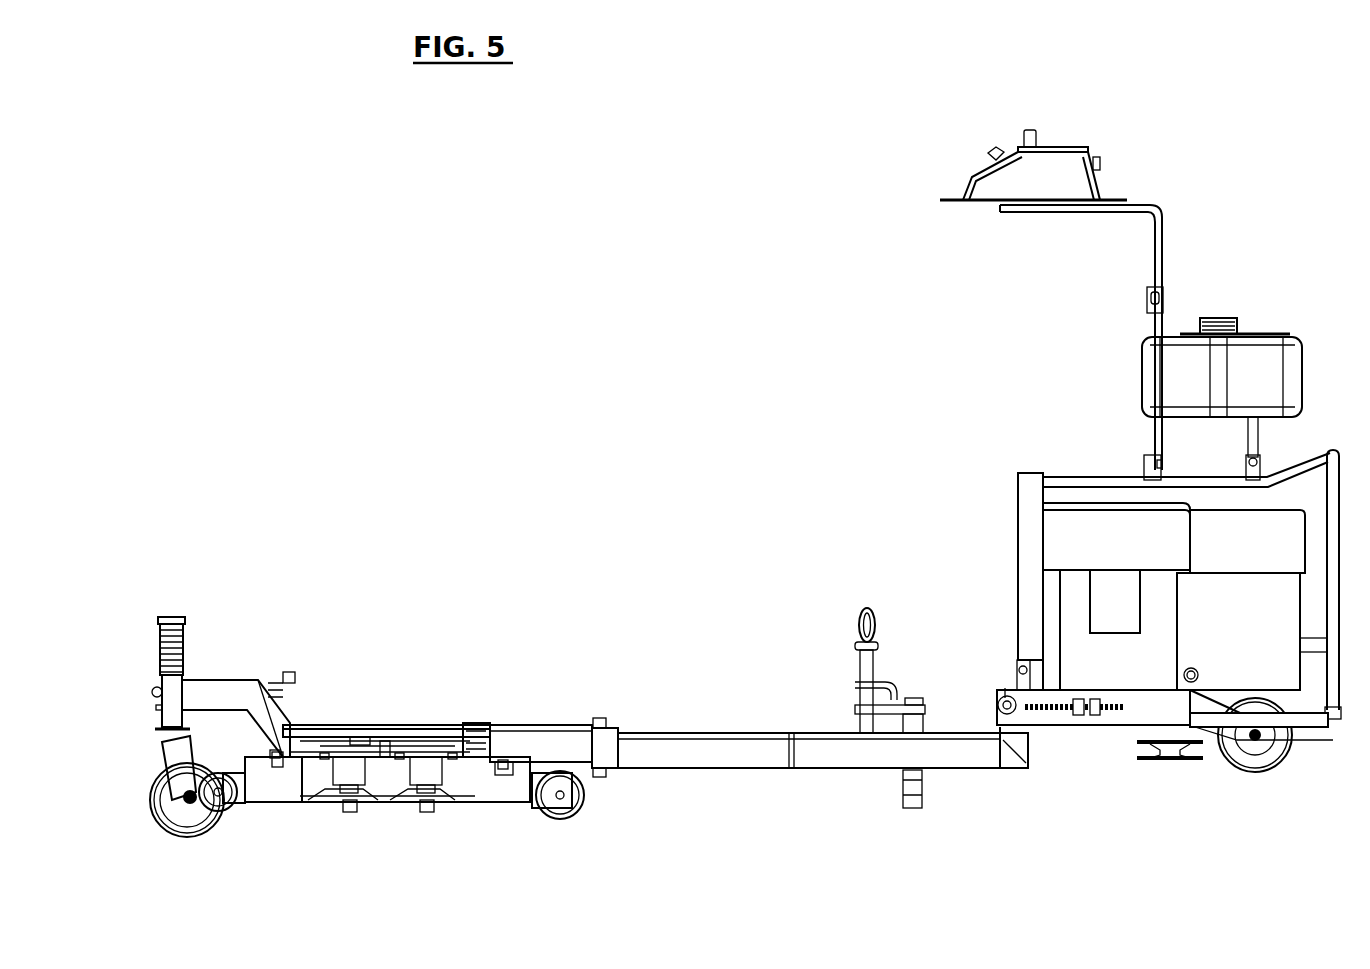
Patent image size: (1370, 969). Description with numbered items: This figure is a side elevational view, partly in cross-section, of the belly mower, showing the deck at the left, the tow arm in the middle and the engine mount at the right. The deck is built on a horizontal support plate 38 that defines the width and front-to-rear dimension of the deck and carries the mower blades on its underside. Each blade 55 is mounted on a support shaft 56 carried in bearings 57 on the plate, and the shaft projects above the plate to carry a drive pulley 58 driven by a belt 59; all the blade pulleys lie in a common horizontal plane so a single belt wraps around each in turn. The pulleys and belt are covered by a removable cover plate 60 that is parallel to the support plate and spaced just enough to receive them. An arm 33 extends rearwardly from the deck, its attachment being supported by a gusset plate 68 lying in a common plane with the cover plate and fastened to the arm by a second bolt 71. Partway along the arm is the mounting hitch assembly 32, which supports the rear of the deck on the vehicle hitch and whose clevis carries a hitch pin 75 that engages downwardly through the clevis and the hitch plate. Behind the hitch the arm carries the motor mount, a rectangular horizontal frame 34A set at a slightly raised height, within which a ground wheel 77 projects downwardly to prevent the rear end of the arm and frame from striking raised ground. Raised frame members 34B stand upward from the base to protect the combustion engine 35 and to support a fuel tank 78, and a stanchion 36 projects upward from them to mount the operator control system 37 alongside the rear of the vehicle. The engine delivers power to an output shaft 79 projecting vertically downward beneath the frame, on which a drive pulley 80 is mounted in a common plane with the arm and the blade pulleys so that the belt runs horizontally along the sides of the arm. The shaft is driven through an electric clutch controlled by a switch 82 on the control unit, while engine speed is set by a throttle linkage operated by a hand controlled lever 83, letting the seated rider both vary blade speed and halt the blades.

The mounting hitch assembly 32 is at (895, 683).
The arm 33 is at (703, 768).
The frame 34A is at (1100, 727).
The raised frame members 34B is at (1018, 497).
The combustion engine 35 is at (1077, 505).
The stanchion 36 is at (1148, 273).
The operator control system 37 is at (1092, 148).
The horizontal support plate 38 is at (470, 757).
The blade 55 is at (447, 816).
The support shaft 56 is at (345, 808).
The bearings 57 is at (327, 790).
The drive pulley 58 is at (372, 726).
The belt 59 is at (800, 767).
The cover plate 60 is at (478, 725).
The gusset plate 68 is at (535, 725).
The second bolt 71 is at (598, 725).
The hitch pin 75 is at (852, 610).
The ground wheel 77 is at (1250, 770).
The fuel tank 78 is at (1257, 332).
The output shaft 79 is at (1163, 745).
The drive pulley 80 is at (1200, 756).
The switch 82 is at (992, 150).
The hand controlled lever 83 is at (1038, 125).